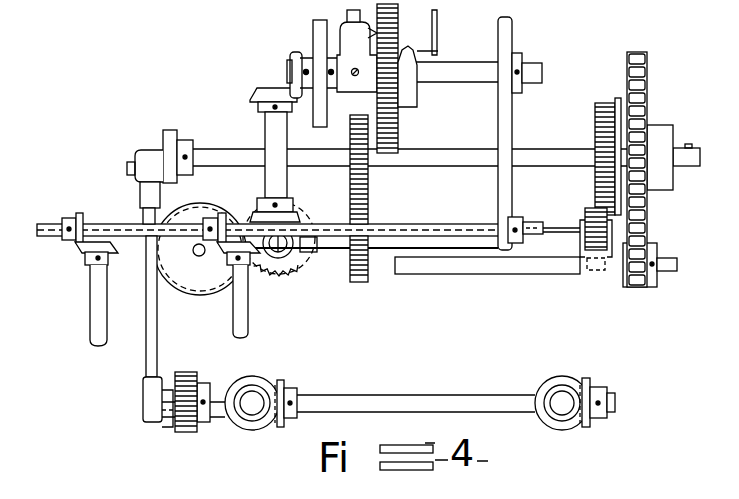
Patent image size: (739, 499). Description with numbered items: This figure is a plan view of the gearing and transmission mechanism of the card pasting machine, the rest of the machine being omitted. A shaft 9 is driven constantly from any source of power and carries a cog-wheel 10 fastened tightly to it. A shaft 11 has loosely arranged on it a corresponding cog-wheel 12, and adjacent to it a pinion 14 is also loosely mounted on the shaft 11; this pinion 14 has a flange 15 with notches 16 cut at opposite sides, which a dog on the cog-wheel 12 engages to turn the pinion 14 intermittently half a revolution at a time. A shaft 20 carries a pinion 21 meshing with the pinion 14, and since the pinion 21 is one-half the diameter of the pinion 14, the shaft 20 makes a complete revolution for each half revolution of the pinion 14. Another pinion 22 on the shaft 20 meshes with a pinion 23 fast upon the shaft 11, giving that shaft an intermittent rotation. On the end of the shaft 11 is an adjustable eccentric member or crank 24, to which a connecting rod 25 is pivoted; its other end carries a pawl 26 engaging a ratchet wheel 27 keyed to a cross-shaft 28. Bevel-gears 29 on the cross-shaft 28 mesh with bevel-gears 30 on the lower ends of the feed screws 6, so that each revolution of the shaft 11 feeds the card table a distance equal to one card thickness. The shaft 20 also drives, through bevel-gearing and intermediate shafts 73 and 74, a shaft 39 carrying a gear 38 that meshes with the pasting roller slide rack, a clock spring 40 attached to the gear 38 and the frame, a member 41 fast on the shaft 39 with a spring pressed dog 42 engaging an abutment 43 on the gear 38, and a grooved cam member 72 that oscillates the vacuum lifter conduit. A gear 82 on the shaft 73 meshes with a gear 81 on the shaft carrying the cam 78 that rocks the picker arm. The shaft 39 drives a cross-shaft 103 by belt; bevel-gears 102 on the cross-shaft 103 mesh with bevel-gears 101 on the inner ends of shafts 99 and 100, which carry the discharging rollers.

The feed screws 6 is at (252, 394).
The shaft 9 is at (498, 266).
The cog-wheel 10 is at (628, 283).
The shaft 11 is at (531, 153).
The cog-wheel 12 is at (647, 105).
The pinion 14 is at (600, 104).
The flange 15 is at (617, 99).
The notches 16 is at (620, 183).
The shaft 20 is at (560, 238).
The pinion 21 is at (592, 210).
The pinion 22 is at (368, 212).
The pinion 23 is at (352, 172).
The eccentric member or crank 24 is at (170, 140).
The connecting rod 25 is at (150, 348).
The ratchet member or pawl 26 is at (190, 421).
The ratchet wheel 27 is at (188, 375).
The cross-shaft 28 is at (385, 396).
The bevel-gears 29 is at (277, 384).
The bevel-gears 30 is at (262, 426).
The gear 38 is at (395, 32).
The shaft 39 is at (453, 72).
The clock spring 40 is at (413, 87).
The member 41 is at (357, 57).
The spring pressed dog 42 is at (346, 13).
The abutment 43 is at (374, 31).
The cam member 72 is at (315, 35).
The shaft 73 is at (280, 239).
The shaft 74 is at (270, 130).
The cam 78 is at (215, 296).
The gear 81 is at (204, 293).
The gear 82 is at (262, 278).
The shaft 99 is at (247, 320).
The shaft 100 is at (95, 327).
The bevel-gears 101 is at (108, 257).
The bevel-gears 102 is at (78, 218).
The cross-shaft 103 is at (123, 226).